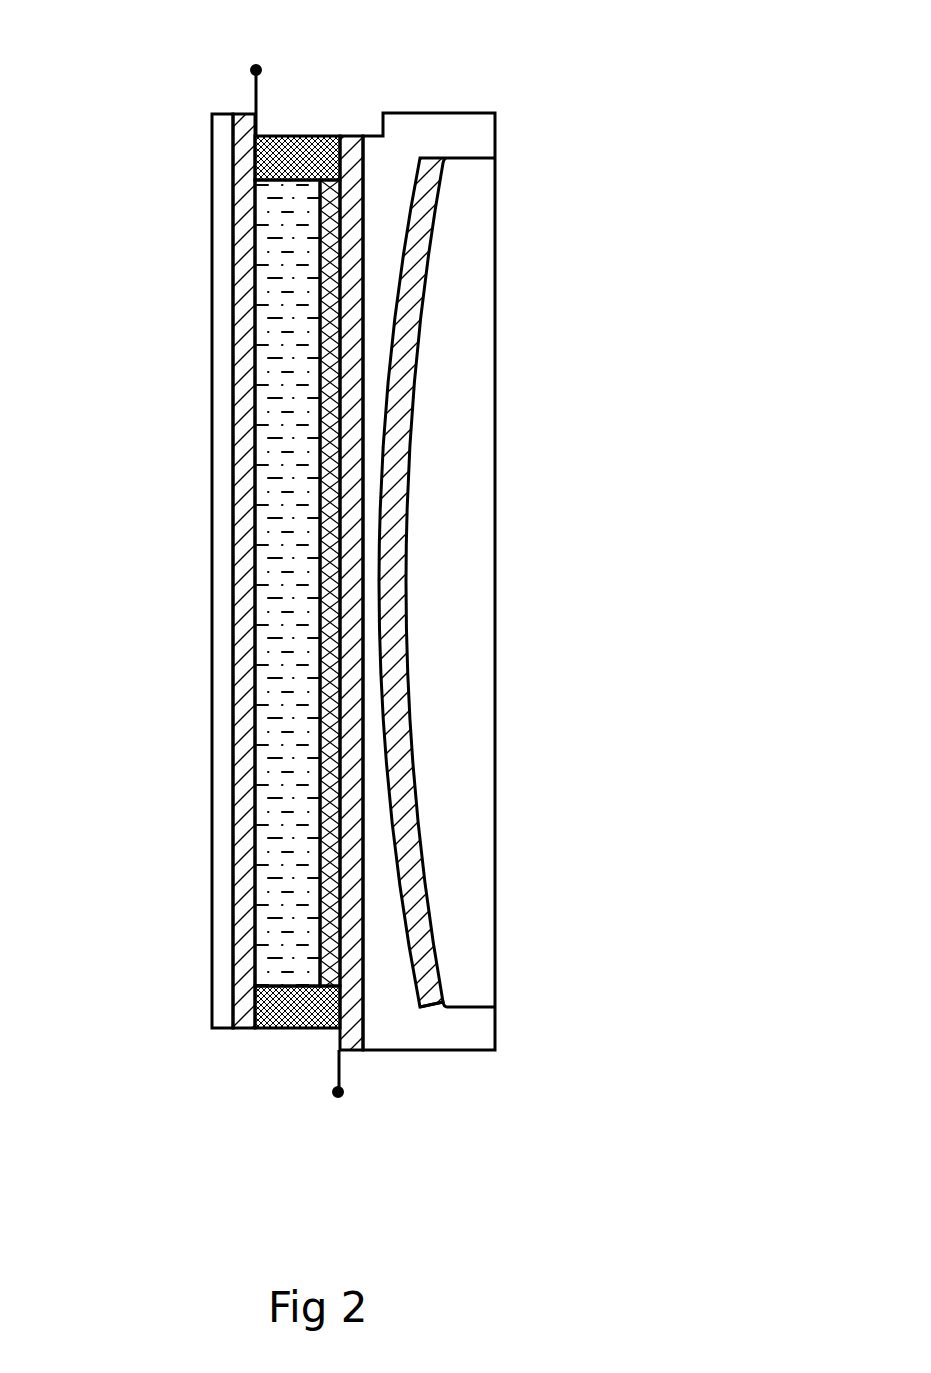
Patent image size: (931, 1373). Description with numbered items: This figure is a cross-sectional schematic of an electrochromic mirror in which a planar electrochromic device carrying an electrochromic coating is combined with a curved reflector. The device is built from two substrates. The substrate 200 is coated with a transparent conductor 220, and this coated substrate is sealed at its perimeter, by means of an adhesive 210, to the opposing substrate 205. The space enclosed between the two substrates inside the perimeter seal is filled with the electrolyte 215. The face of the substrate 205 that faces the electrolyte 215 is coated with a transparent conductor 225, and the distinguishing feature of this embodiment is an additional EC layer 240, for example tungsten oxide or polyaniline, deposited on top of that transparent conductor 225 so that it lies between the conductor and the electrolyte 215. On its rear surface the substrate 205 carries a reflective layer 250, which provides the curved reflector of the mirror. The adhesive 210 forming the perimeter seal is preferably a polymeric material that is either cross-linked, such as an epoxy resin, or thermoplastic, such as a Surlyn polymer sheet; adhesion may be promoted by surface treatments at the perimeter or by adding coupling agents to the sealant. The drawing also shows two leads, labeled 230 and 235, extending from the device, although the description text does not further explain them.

The substrate 200 is at (222, 1022).
The substrate 205 is at (445, 1040).
The adhesive 210 is at (305, 133).
The electrolyte 215 is at (285, 366).
The transparent conductor 220 is at (247, 697).
The transparent conductor 225 is at (350, 779).
The electrode lead 230 is at (317, 1095).
The electrode lead 235 is at (245, 59).
The EC layer 240 is at (333, 302).
The reflective layer 250 is at (396, 500).